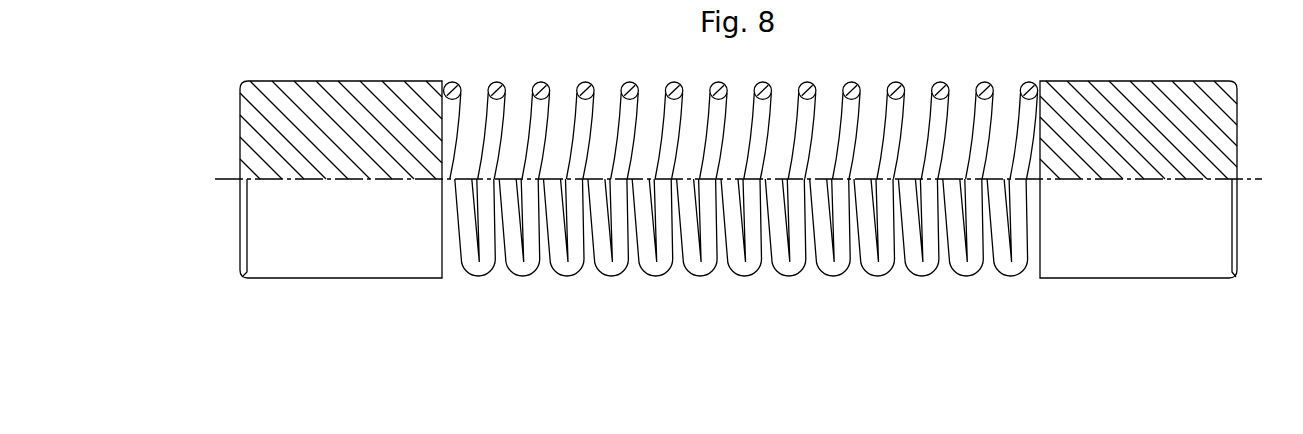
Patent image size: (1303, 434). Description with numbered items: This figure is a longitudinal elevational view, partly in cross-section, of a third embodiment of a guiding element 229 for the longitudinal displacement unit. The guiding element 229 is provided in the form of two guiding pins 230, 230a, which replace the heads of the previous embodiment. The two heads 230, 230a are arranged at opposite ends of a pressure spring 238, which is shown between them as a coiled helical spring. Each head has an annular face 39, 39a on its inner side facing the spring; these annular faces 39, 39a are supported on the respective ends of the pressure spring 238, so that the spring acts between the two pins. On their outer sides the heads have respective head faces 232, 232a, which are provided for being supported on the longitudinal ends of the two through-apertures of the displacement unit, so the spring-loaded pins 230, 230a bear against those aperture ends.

The guiding element 229 is at (741, 144).
The guiding pin 230 is at (324, 152).
The guiding pin 230a is at (1169, 150).
The head face 232 is at (240, 105).
The head face 232a is at (1238, 106).
The pressure spring 238 is at (630, 82).
The annular face 39 is at (442, 114).
The annular face 39a is at (1038, 113).